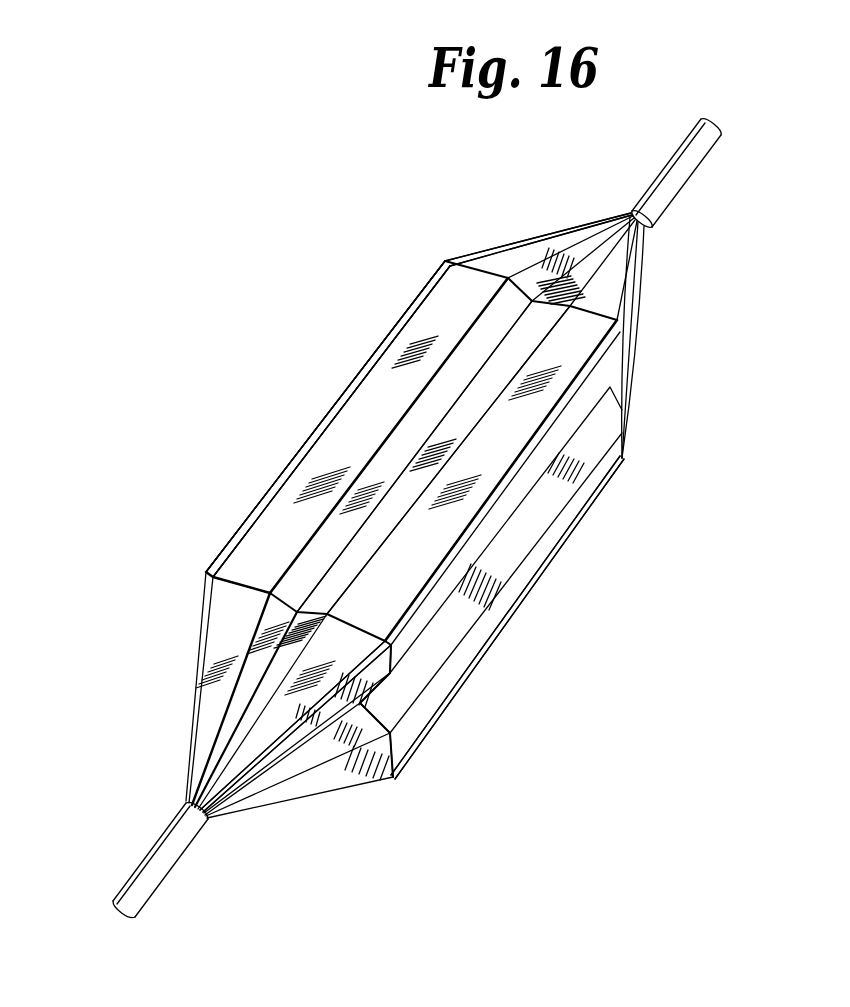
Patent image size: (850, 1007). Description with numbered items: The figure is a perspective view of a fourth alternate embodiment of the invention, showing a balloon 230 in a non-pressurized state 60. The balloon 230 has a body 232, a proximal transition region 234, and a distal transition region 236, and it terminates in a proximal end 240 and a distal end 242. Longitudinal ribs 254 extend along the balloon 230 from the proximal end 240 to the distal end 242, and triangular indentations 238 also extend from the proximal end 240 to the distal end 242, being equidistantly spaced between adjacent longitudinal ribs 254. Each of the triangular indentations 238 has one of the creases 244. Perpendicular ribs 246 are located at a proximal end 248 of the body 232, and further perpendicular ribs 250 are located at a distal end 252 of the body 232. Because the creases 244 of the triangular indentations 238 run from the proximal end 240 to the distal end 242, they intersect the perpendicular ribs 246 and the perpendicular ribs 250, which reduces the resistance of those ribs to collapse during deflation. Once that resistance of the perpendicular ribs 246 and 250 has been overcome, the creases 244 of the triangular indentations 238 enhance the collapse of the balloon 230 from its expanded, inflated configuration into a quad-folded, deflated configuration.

The non-pressurized state 60 is at (275, 448).
The balloon 230 is at (258, 338).
The body 232 is at (452, 278).
The proximal transition region 234 is at (187, 653).
The distal transition region 236 is at (560, 208).
The triangular indentations 238 is at (485, 340).
The proximal end 240 is at (213, 820).
The distal end 242 is at (650, 229).
The creases 244 is at (437, 345).
The perpendicular ribs 246 is at (393, 752).
The proximal end of body 248 is at (252, 584).
The perpendicular ribs 250 is at (625, 437).
The distal end of body 252 is at (472, 257).
The longitudinal ribs 254 is at (337, 408).